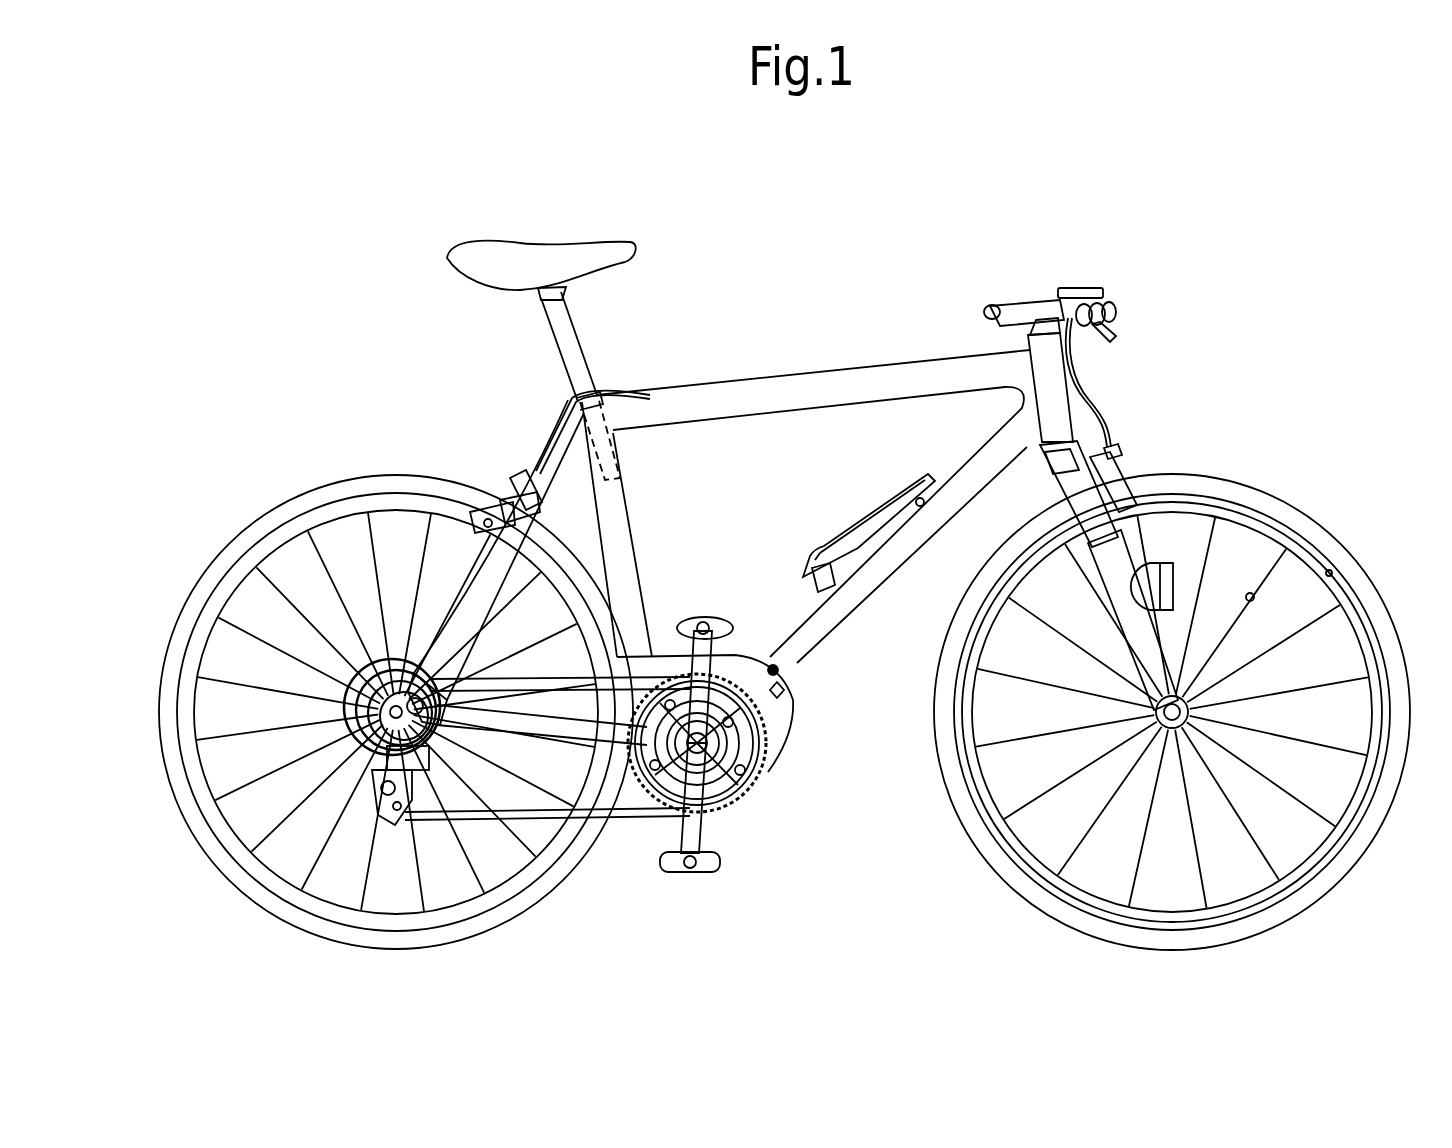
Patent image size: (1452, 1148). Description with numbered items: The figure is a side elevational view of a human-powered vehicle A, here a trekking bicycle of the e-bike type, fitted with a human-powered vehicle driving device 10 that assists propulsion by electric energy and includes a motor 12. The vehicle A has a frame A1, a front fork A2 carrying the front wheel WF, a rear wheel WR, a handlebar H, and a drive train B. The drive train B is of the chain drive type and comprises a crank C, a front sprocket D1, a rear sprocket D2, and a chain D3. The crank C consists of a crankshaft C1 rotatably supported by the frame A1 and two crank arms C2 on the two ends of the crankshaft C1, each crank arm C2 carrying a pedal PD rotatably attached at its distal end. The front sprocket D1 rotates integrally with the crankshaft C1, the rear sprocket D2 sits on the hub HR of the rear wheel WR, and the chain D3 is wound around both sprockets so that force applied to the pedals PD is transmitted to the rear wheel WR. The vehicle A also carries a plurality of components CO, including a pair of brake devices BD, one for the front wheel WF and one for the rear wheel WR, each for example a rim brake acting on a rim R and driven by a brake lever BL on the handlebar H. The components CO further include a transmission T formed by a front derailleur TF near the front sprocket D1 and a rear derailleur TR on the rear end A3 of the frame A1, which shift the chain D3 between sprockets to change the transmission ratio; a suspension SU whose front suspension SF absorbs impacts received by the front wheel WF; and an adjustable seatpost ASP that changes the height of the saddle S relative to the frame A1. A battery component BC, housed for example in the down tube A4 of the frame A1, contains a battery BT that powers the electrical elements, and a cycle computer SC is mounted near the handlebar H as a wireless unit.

The human-powered vehicle A is at (1086, 165).
The saddle S is at (546, 240).
The adjustable seatpost ASP is at (580, 337).
The cycle computer SC is at (1080, 286).
The brake lever BL is at (1125, 312).
The handlebar H is at (1117, 328).
The components CO is at (1155, 336).
The frame A1 is at (855, 348).
The brake devices BD is at (517, 485).
The battery component BC is at (869, 498).
The battery BT is at (853, 512).
The rear wheel WR is at (330, 484).
The front wheel WF is at (1240, 484).
The rim R is at (226, 598).
The front derailleur TF is at (648, 632).
The transmission T is at (722, 616).
The rear end A3 is at (402, 660).
The pedal PD is at (700, 613).
The crank arms C2 is at (717, 643).
The rear sprocket D2 is at (350, 672).
The motor 12 is at (780, 672).
The human-powered vehicle driving device 10 is at (793, 712).
The hub HR is at (440, 730).
The crankshaft C1 is at (768, 768).
The front suspension SF is at (1109, 575).
The suspension SU is at (1087, 540).
The down tube A4 is at (897, 573).
The front fork A2 is at (1120, 637).
The rear derailleur TR is at (440, 823).
The chain D3 is at (490, 822).
The front sprocket D1 is at (633, 820).
The crank C is at (728, 740).
The drive train B is at (758, 900).